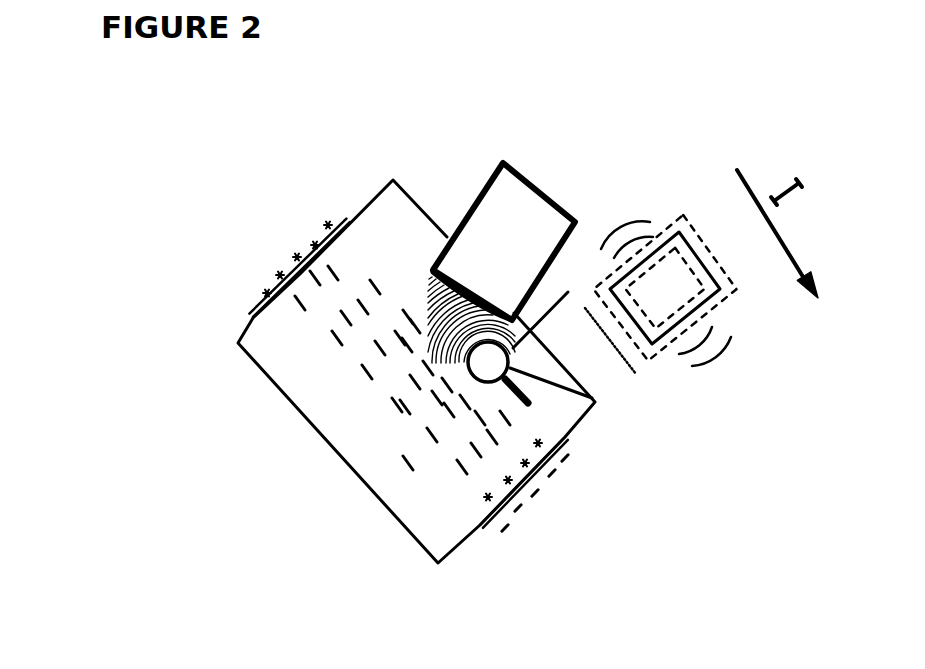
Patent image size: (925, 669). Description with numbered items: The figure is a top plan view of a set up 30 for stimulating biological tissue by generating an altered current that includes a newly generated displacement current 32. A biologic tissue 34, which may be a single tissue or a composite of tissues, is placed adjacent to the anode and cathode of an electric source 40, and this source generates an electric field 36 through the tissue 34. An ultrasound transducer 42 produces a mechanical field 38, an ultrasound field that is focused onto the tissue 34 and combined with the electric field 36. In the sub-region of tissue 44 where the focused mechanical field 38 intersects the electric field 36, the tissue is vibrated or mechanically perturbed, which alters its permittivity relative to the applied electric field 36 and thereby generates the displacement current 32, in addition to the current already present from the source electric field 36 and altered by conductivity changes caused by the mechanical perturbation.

The set up 30 is at (98, 296).
The displacement current 32 is at (807, 207).
The biologic tissue 34 is at (345, 527).
The electric field 36 is at (352, 236).
The mechanical field 38 is at (437, 297).
The electric source 40 is at (465, 505).
The ultrasound transducer 42 is at (505, 165).
The sub-region of tissue 44 is at (699, 233).